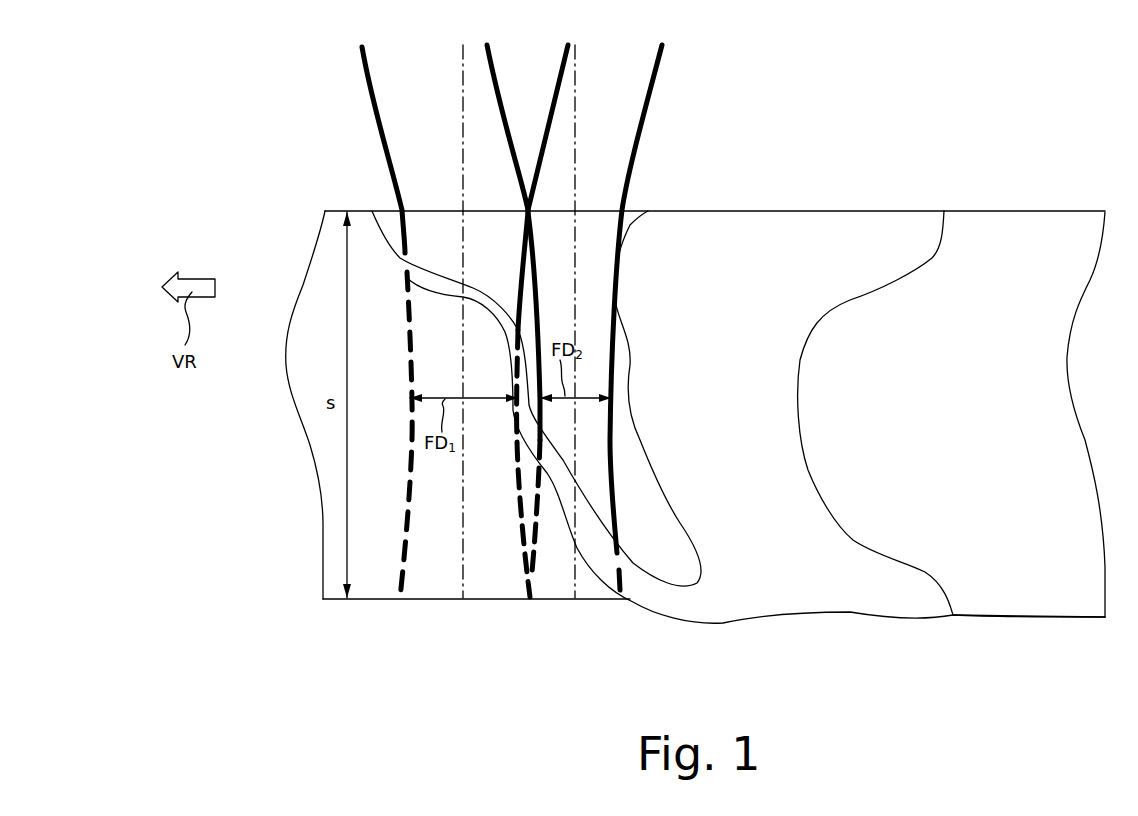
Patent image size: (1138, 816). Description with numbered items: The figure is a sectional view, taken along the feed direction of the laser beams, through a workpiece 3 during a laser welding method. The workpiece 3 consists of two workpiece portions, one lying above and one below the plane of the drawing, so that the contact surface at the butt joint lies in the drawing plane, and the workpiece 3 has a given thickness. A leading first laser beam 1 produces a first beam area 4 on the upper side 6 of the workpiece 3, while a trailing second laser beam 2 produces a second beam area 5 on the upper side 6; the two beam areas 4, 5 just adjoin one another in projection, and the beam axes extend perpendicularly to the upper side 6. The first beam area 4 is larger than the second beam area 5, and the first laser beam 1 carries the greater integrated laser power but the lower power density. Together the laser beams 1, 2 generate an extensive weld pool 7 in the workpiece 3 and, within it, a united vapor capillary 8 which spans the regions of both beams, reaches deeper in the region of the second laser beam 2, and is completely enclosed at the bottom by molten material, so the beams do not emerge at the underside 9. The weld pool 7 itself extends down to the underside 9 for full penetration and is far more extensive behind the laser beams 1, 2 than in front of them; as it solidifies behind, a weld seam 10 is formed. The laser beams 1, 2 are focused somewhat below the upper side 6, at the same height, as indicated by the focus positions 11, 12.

The first laser beam 1 is at (368, 73).
The second laser beam 2 is at (648, 102).
The workpiece 3 is at (315, 302).
The first beam area 4 is at (433, 210).
The second beam area 5 is at (598, 208).
The upper side 6 is at (360, 208).
The weld pool 7 is at (773, 238).
The vapor capillary 8 is at (660, 550).
The underside 9 is at (372, 600).
The weld seam 10 is at (1012, 622).
The focus position 11 is at (408, 399).
The focus position 12 is at (622, 400).